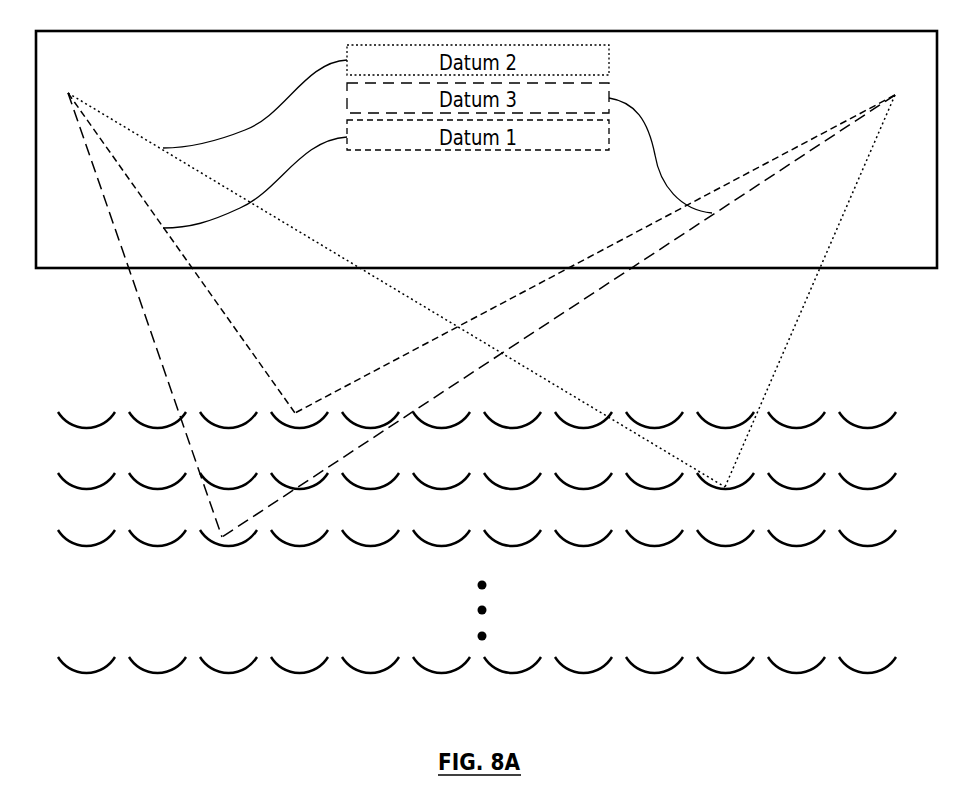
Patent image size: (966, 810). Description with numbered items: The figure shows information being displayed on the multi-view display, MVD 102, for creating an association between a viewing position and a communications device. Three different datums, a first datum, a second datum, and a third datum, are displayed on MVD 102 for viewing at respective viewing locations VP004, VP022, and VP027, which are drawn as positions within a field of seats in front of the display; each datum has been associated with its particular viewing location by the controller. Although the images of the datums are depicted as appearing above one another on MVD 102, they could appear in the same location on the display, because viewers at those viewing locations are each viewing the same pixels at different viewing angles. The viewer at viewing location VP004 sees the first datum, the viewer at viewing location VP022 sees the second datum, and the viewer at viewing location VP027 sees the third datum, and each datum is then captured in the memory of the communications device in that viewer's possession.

The multi-view display (MVD) 102 is at (486, 136).
The viewing location VL-004 VP004 is at (288, 423).
The viewing location VL-022 VP022 is at (747, 483).
The viewing location VL-027 VP027 is at (232, 545).